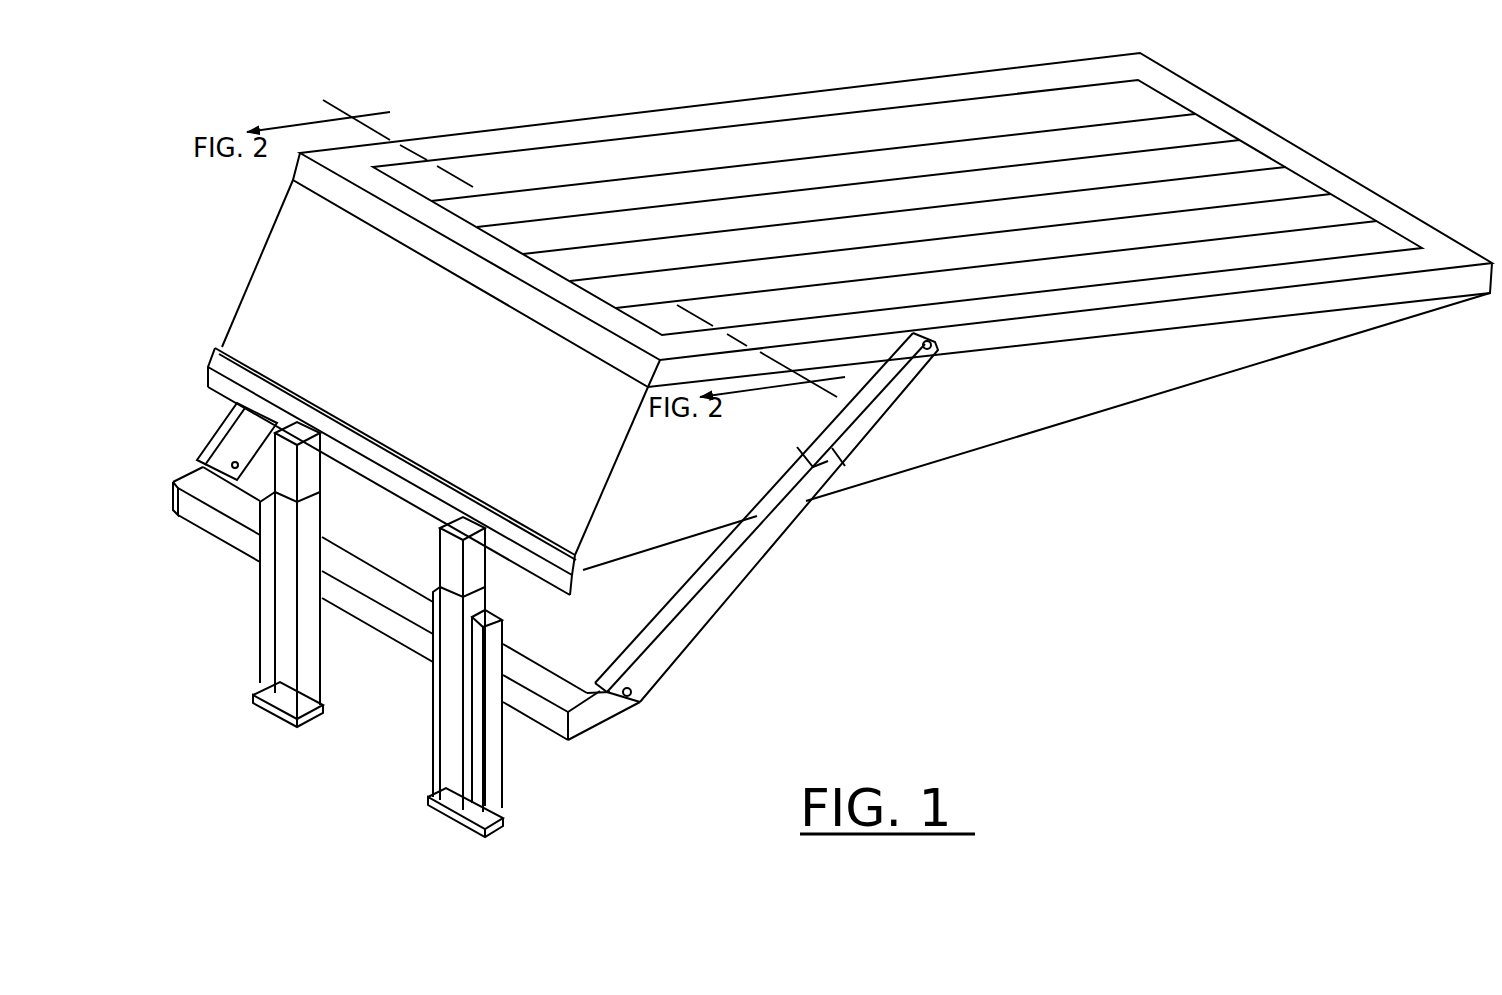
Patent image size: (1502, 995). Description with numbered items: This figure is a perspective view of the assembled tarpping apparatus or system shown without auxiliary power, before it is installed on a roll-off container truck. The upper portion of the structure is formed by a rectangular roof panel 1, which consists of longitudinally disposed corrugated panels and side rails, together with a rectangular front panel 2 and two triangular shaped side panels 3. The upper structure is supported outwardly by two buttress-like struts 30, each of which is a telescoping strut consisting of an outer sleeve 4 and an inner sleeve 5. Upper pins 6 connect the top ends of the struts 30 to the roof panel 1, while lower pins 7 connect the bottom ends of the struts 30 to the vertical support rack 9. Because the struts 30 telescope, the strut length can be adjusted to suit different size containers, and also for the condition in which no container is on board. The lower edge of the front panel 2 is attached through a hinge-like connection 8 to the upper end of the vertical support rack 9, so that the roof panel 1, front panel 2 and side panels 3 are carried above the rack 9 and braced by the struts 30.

The rectangular roof panel 1 is at (892, 220).
The rectangular front panel 2 is at (435, 367).
The triangular shaped side panel 3 is at (1036, 431).
The outer sleeve 4 is at (553, 517).
The inner sleeve 5 is at (864, 483).
The upper pin 6 is at (972, 379).
The lower pin 7 is at (647, 725).
The hinge-like connection 8 is at (357, 443).
The vertical support rack 9 is at (375, 629).
The buttress-like strut 30 is at (864, 523).